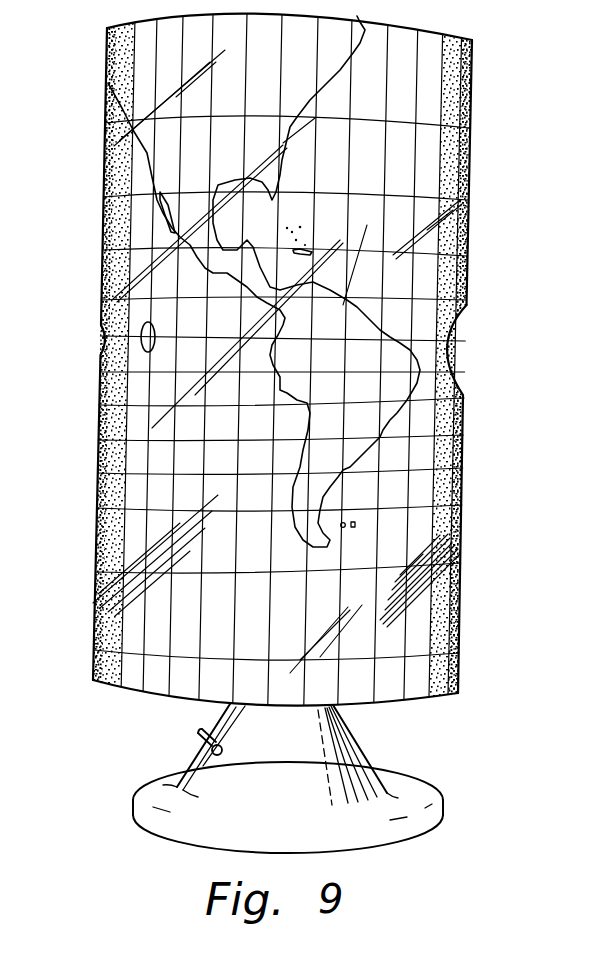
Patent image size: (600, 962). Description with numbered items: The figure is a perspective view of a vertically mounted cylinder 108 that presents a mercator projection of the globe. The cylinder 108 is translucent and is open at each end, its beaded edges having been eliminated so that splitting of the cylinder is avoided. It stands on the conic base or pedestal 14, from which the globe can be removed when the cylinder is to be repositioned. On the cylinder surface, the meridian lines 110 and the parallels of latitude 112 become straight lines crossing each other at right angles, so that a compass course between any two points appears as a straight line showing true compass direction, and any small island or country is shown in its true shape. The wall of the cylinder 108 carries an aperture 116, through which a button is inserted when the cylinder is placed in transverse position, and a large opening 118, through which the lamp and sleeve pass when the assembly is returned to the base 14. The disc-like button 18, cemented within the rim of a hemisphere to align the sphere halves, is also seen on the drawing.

The conic base 14 is at (282, 776).
The disc-like button 18 is at (154, 326).
The cylinder 108 is at (468, 243).
The meridian lines 110 is at (345, 327).
The parallels of latitude 112 is at (325, 345).
The aperture 116 is at (100, 336).
The large opening 118 is at (452, 333).